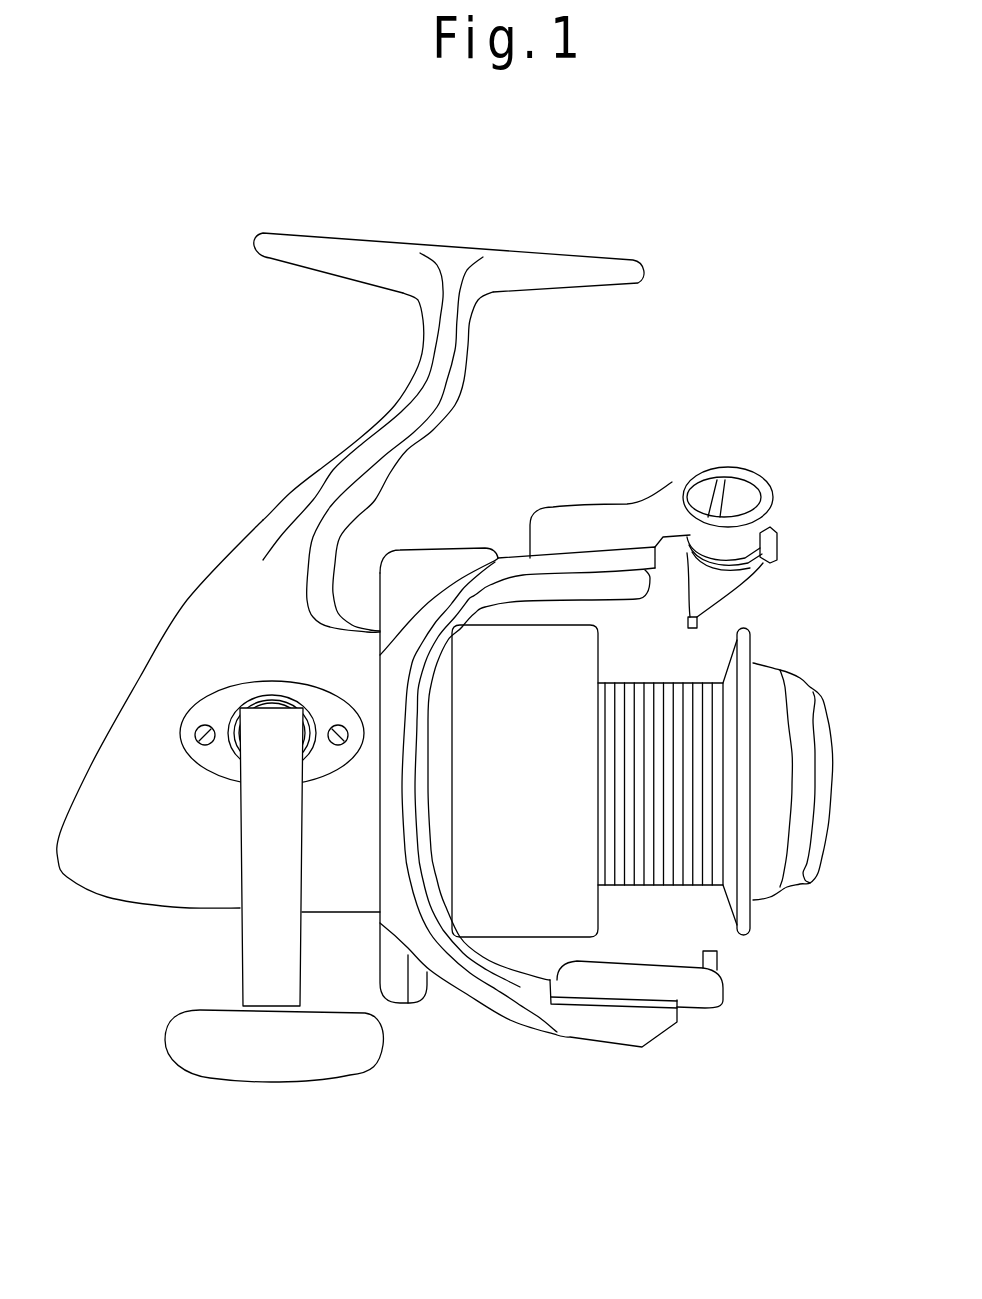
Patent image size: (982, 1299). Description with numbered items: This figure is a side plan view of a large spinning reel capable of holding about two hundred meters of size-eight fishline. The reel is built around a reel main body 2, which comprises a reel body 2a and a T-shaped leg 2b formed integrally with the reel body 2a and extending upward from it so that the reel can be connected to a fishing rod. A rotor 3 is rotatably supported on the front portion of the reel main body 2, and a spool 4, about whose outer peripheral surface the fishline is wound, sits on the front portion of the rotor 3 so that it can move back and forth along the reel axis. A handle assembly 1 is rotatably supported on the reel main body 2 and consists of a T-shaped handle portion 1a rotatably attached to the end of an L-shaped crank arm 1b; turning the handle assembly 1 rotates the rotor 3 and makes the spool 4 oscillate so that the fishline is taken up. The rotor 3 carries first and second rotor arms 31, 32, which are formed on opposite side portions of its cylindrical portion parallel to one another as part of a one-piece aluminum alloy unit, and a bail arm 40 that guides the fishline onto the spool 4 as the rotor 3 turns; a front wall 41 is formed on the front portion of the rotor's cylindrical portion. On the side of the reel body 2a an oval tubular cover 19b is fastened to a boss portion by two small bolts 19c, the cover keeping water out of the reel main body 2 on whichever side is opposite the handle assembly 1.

The handle assembly 1 is at (274, 930).
The handle portion 1a is at (278, 1062).
The crank arm 1b is at (283, 945).
The reel main body 2 is at (350, 572).
The reel body 2a is at (147, 680).
The leg 2b is at (257, 527).
The rotor 3 is at (576, 761).
The first rotor arm 31 is at (570, 563).
The second rotor arm 32 is at (583, 1020).
The spool 4 is at (647, 680).
The bail arm 40 is at (787, 553).
The front wall 41 is at (697, 617).
The tubular cover 19b is at (227, 703).
The small bolts 19c is at (198, 743).